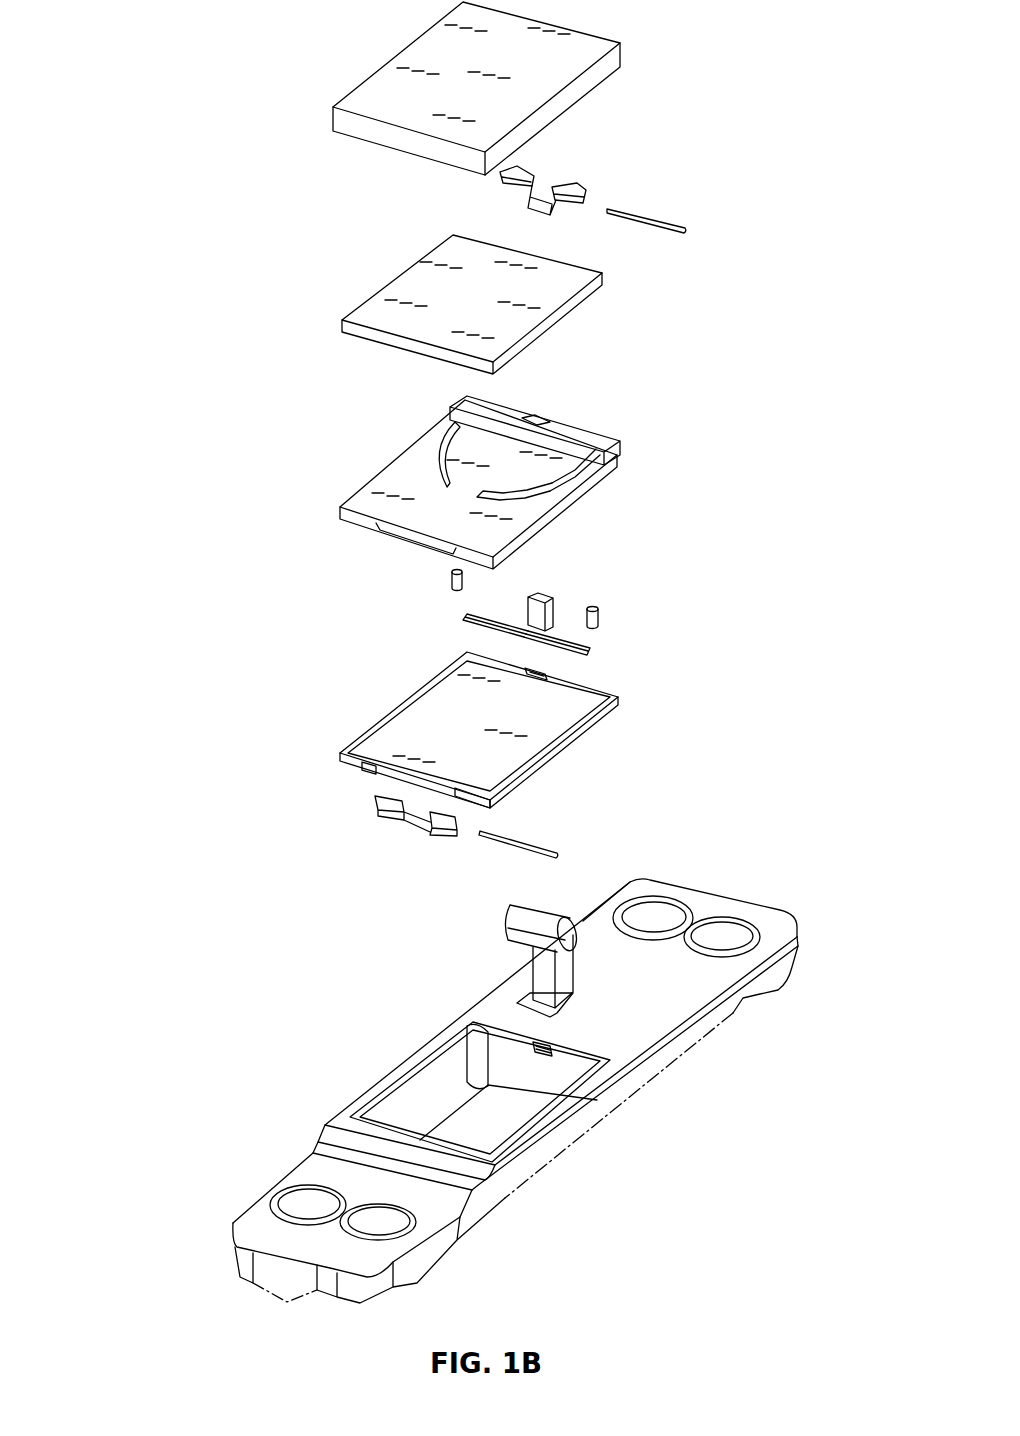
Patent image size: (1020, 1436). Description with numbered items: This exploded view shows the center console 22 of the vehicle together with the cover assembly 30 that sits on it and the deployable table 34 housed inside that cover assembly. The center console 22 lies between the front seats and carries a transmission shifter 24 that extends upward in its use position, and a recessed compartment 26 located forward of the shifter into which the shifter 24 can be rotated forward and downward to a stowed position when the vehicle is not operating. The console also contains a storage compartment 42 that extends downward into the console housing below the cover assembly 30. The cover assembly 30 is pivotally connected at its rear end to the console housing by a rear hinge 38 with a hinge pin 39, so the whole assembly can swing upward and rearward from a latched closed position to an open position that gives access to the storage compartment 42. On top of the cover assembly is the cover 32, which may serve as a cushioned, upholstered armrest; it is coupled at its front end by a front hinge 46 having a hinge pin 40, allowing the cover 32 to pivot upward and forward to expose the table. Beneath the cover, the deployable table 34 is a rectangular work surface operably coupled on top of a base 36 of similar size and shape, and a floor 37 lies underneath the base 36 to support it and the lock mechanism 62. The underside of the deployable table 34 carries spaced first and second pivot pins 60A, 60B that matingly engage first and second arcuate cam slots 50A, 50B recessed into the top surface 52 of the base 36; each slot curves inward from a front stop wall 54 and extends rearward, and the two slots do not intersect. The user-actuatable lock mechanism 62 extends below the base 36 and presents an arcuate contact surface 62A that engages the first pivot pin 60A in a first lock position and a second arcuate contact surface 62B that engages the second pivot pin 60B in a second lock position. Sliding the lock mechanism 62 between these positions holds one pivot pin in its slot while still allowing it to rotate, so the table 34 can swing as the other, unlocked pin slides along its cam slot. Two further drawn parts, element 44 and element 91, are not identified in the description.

The center console 22 is at (705, 900).
The transmission shifter 24 is at (515, 910).
The recessed compartment 26 is at (613, 957).
The cover assembly 30 is at (148, 164).
The cover 32 is at (375, 95).
The deployable table 34 is at (373, 312).
The base 36 is at (373, 503).
The floor 37 is at (373, 752).
The rear hinge 38 is at (376, 800).
The hinge pin 39 is at (557, 847).
The hinge pin 40 is at (687, 222).
The storage compartment 42 is at (403, 1100).
The clip arm 44 is at (583, 195).
The front hinge 46 is at (522, 178).
The first arcuate cam slot 50A is at (455, 430).
The second arcuate cam slot 50B is at (600, 445).
The top surface 52 is at (523, 502).
The front stop wall 54 is at (505, 410).
The first pivot pin 60A is at (450, 580).
The second pivot pin 60B is at (600, 615).
The lock mechanism 62 is at (548, 597).
The arcuate contact surface 62A is at (465, 617).
The second arcuate contact surface 62B is at (600, 652).
The connector 91 is at (533, 1050).